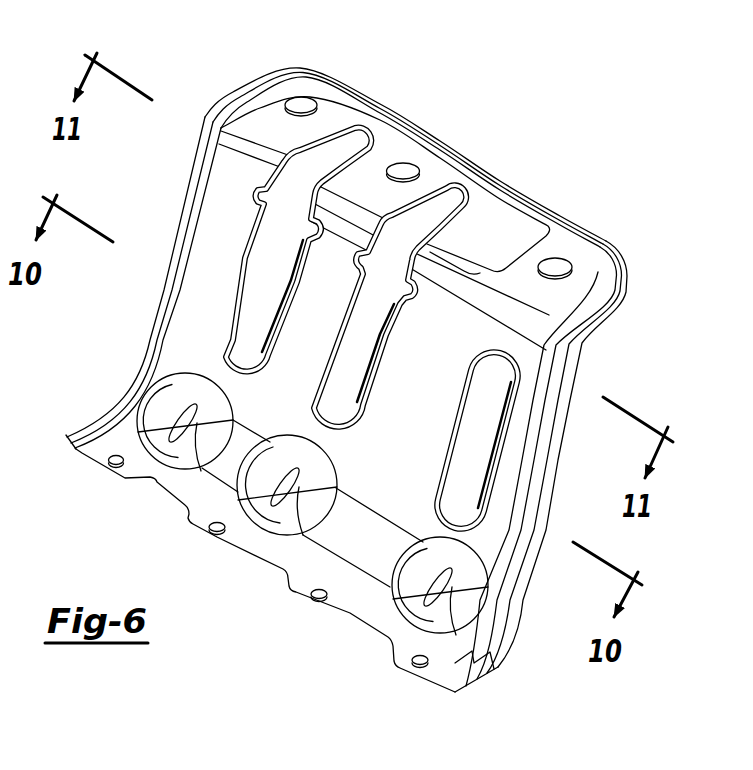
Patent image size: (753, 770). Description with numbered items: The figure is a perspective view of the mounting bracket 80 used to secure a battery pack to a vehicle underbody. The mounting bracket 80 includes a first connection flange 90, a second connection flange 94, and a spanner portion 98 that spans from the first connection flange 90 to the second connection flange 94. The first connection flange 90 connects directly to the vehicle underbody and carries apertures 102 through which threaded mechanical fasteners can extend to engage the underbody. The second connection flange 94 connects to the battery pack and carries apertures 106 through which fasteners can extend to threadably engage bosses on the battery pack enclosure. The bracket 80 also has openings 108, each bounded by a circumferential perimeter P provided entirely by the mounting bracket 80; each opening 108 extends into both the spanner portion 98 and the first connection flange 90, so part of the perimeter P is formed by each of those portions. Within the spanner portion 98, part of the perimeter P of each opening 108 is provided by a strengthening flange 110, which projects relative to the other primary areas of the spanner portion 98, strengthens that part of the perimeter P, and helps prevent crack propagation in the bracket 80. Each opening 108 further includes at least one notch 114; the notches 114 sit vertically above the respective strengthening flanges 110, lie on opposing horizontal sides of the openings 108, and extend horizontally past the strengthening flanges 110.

The mounting bracket 80 is at (252, 46).
The first connection flange 90 is at (628, 286).
The second connection flange 94 is at (484, 680).
The spanner portion 98 is at (543, 383).
The apertures 102 is at (312, 92).
The apertures 106 is at (110, 469).
The openings 108 is at (238, 355).
The strengthening flange 110 is at (339, 343).
The notch 114 is at (256, 199).
The circumferential perimeter P is at (246, 307).